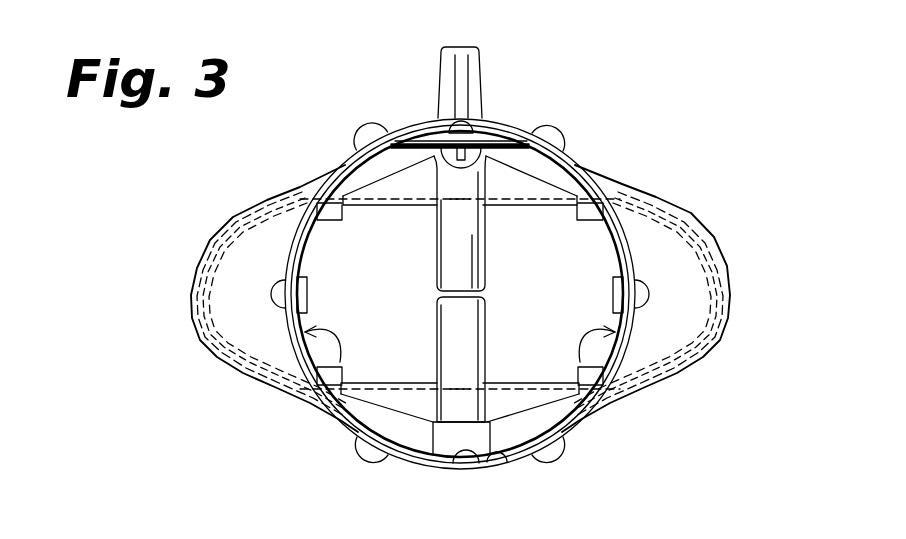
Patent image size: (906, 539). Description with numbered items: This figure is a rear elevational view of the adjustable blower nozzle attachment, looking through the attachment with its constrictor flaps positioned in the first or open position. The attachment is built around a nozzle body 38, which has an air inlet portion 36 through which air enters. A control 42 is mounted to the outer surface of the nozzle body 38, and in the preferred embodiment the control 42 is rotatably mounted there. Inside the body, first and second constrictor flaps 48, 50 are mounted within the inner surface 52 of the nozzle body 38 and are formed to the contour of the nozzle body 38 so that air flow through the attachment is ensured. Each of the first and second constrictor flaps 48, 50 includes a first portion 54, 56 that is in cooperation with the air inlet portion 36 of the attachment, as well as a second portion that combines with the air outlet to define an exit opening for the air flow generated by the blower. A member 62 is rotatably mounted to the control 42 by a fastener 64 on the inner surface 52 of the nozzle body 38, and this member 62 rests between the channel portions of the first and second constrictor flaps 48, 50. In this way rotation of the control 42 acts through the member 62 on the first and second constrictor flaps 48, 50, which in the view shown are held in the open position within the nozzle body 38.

The air inlet portion 36 is at (343, 165).
The nozzle body 38 is at (237, 313).
The control 42 is at (477, 78).
The first constrictor flap 48 is at (597, 370).
The second constrictor flap 50 is at (335, 372).
The inner surface 52 is at (507, 455).
The first portion 54 is at (586, 183).
The first portion 56 is at (345, 188).
The member 62 is at (423, 141).
The fastener 64 is at (520, 132).